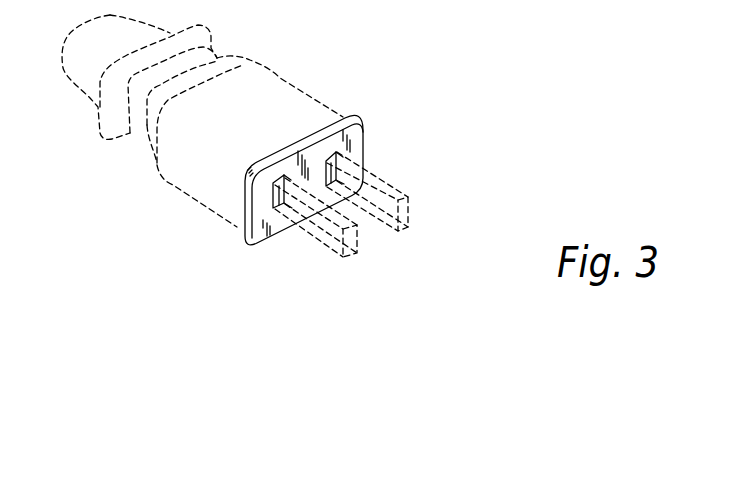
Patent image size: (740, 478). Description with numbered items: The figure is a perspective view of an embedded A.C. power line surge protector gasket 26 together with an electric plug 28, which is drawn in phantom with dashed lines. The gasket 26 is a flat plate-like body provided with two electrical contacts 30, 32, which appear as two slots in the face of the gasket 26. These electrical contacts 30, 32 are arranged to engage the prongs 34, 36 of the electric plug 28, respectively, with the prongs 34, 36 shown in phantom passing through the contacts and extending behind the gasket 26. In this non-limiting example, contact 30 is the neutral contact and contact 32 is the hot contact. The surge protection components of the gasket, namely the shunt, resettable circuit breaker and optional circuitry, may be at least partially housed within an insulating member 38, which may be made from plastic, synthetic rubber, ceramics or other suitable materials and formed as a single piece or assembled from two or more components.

The embedded A.C. power line surge protector gasket 26 is at (342, 119).
The electric plug 28 is at (280, 83).
The electrical contact 30 is at (338, 163).
The electrical contact 32 is at (268, 236).
The prong 34 is at (396, 192).
The prong 36 is at (331, 250).
The insulating member 38 is at (253, 198).